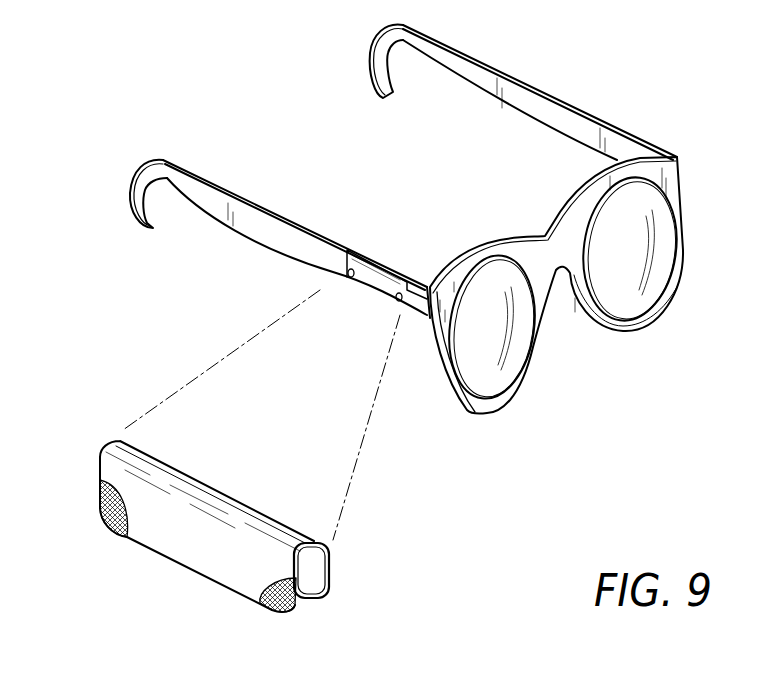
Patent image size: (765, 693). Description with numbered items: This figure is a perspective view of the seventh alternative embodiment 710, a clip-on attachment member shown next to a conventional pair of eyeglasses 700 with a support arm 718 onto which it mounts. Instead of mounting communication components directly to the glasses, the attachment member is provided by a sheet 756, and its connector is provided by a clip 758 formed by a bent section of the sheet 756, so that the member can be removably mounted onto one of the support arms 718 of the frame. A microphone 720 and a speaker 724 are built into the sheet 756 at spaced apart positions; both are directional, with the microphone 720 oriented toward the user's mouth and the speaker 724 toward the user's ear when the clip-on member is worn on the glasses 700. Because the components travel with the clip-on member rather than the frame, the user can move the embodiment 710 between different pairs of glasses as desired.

The eyewear 700 is at (537, 222).
The earstem 718 is at (263, 203).
The sheet 756 is at (382, 257).
The seventh alternative embodiment 710 is at (158, 563).
The speaker 724 is at (100, 492).
The microphone 720 is at (282, 613).
The clip 758 is at (330, 570).